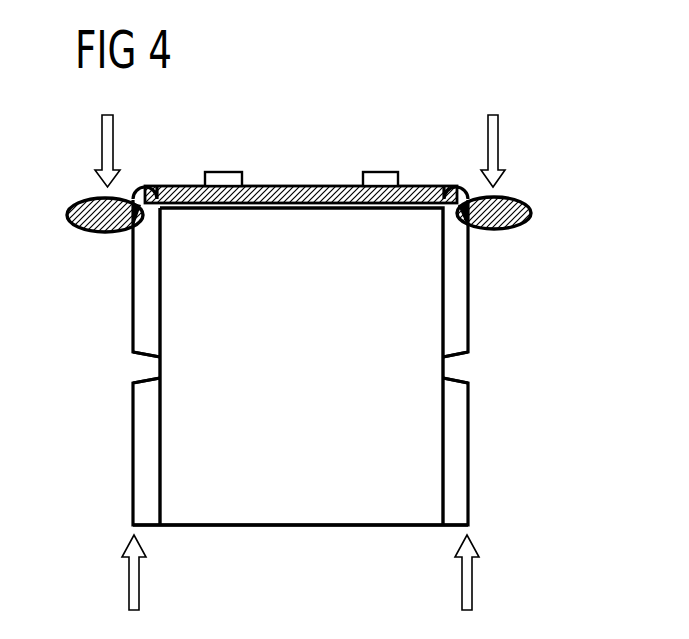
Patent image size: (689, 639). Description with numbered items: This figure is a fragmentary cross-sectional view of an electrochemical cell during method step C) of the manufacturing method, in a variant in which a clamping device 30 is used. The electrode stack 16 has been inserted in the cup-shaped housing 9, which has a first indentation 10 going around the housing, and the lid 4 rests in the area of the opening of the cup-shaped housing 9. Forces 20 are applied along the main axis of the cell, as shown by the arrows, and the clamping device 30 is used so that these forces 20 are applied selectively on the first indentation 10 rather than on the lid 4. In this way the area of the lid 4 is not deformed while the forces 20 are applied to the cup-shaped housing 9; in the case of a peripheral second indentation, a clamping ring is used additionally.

The lid 4 is at (310, 195).
The cup-shaped housing 9 is at (472, 450).
The first indentation 10 is at (450, 362).
The electrode stack 16 is at (351, 514).
The force 20 is at (112, 138).
The clamping device 30 is at (502, 222).